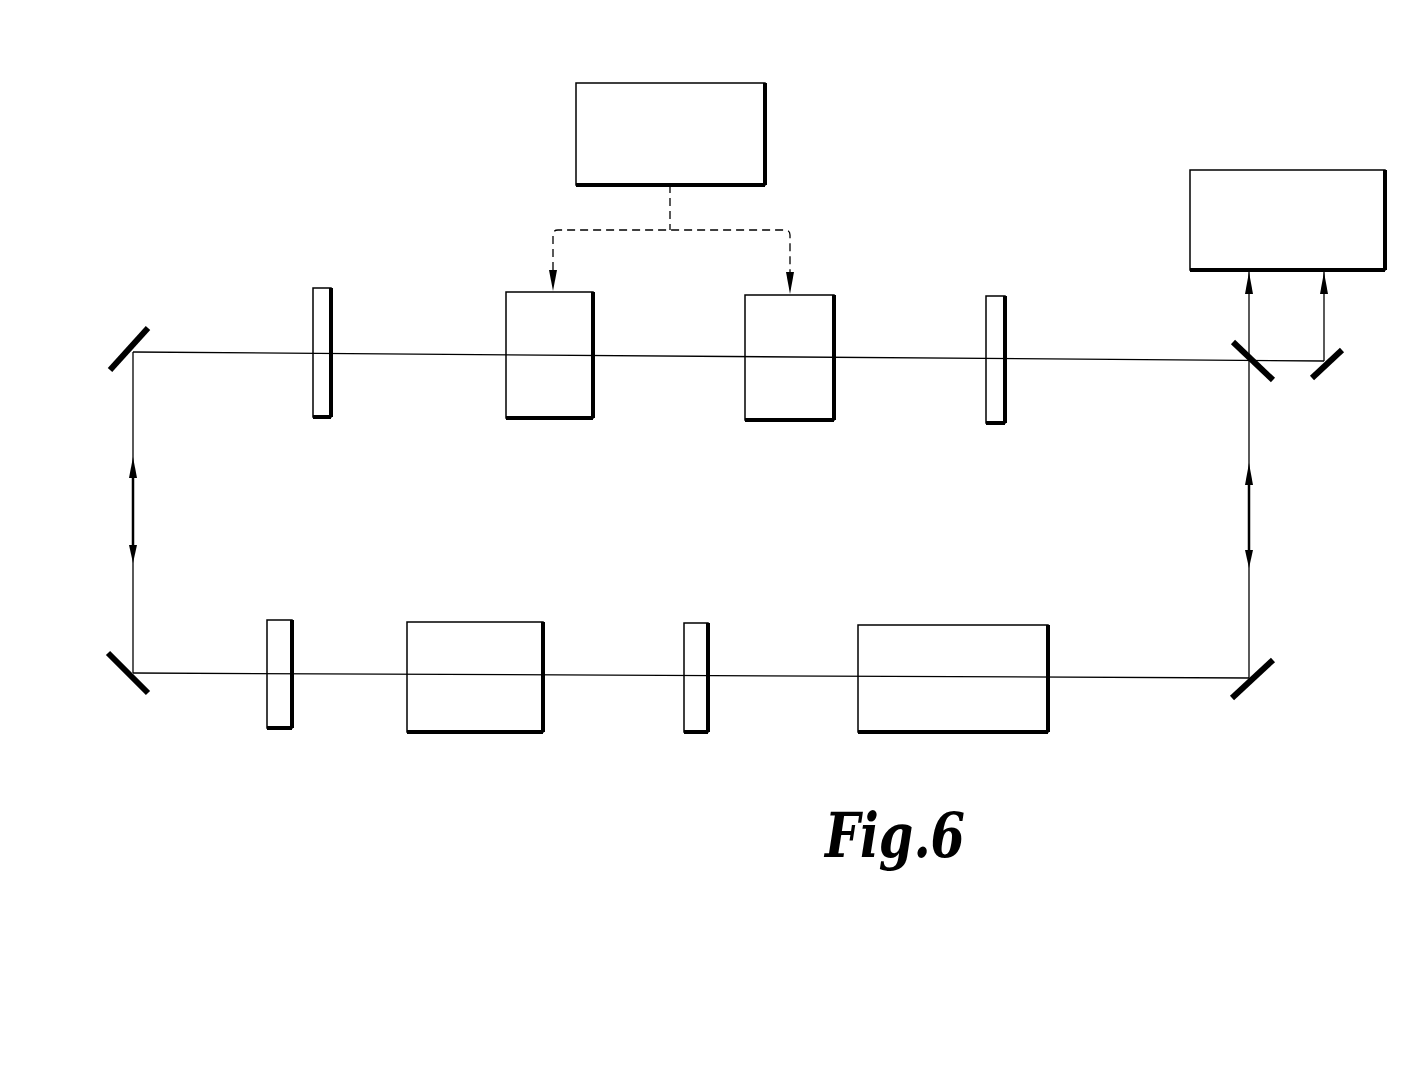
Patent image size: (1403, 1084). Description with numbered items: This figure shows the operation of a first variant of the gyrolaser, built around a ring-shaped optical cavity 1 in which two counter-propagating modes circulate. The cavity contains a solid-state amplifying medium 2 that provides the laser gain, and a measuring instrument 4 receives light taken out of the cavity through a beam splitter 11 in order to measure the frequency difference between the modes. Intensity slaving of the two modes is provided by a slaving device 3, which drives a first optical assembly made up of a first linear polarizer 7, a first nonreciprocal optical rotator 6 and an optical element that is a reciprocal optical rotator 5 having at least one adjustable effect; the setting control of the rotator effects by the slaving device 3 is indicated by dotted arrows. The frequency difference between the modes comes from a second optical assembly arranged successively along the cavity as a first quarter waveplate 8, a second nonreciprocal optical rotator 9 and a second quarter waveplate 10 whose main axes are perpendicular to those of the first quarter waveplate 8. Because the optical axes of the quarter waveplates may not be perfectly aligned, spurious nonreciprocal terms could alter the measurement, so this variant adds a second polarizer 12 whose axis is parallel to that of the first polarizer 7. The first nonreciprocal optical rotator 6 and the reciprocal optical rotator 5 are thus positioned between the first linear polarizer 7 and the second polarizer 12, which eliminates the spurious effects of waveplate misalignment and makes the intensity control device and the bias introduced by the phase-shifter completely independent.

The ring-shaped optical cavity 1 is at (1310, 536).
The solid-state amplifying medium 2 is at (1043, 647).
The slaving device 3 is at (530, 152).
The measuring instrument 4 is at (1192, 207).
The reciprocal optical rotator 5 is at (585, 325).
The first nonreciprocal optical rotator 6 is at (826, 318).
The first linear polarizer 7 is at (1000, 332).
The first quarter waveplate 8 is at (290, 627).
The second nonreciprocal optical rotator 9 is at (445, 626).
The second quarter waveplate 10 is at (705, 633).
The beam splitter 11 is at (1273, 382).
The second polarizer 12 is at (328, 325).